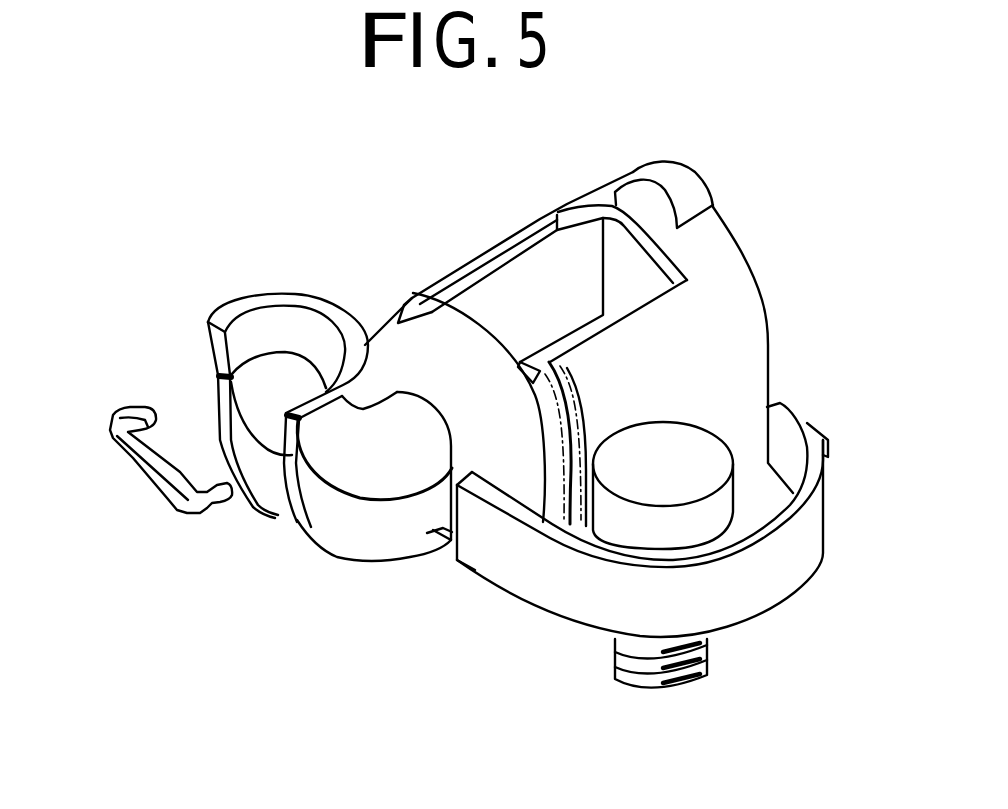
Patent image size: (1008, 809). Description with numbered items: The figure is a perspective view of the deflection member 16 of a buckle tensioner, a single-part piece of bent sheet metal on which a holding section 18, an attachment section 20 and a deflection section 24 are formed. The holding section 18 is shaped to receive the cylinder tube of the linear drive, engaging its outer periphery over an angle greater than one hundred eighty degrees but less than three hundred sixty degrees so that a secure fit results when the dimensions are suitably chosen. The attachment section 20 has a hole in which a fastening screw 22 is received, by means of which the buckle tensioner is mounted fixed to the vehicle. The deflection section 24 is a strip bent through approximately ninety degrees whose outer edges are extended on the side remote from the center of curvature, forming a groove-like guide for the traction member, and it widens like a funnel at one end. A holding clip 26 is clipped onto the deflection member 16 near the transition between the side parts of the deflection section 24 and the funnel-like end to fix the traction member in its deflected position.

The deflection member 16 is at (484, 458).
The holding section 18 is at (727, 307).
The attachment section 20 is at (798, 550).
The fastening screw 22 is at (700, 453).
The deflection section 24 is at (373, 468).
The holding clip 26 is at (153, 463).